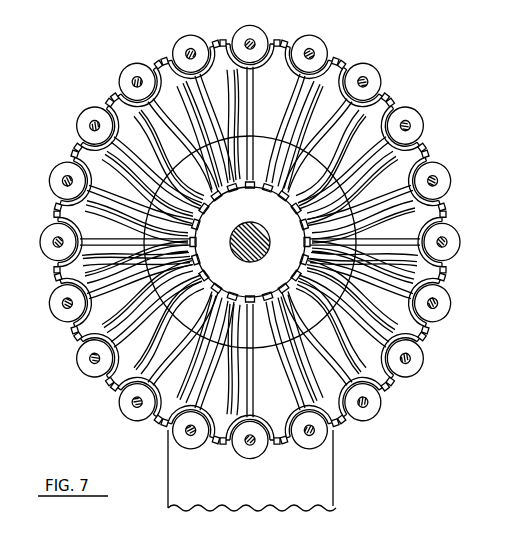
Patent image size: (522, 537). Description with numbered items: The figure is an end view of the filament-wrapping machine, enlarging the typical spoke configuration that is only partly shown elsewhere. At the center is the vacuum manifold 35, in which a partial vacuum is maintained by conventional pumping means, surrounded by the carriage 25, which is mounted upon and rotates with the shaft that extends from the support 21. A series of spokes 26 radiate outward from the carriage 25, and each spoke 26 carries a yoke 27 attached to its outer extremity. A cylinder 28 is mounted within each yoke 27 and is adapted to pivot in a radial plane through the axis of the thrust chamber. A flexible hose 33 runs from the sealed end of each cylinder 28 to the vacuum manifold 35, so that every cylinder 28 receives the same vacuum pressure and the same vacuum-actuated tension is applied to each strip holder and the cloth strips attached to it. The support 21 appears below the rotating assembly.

The support 21 is at (263, 485).
The carriage 25 is at (330, 195).
The spoke 26 is at (140, 158).
The yoke 27 is at (65, 157).
The cylinder 28 is at (80, 128).
The flexible hose 33 is at (240, 184).
The vacuum manifold 35 is at (268, 283).